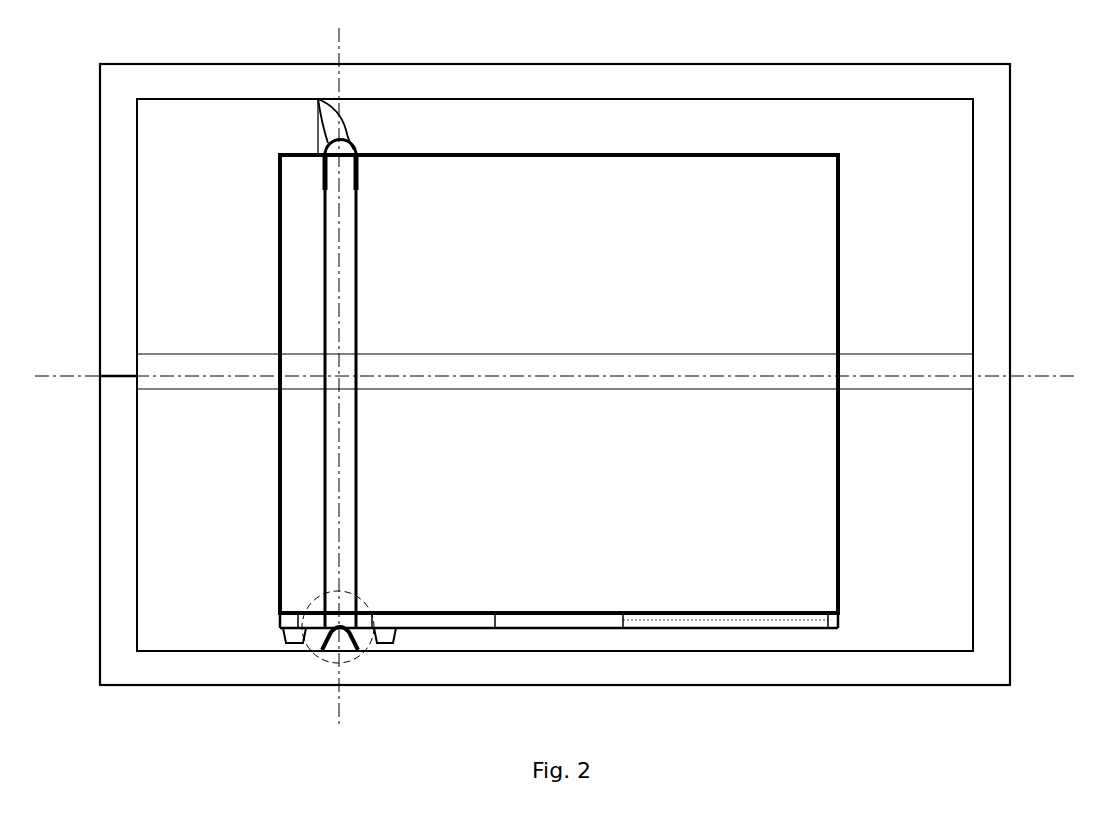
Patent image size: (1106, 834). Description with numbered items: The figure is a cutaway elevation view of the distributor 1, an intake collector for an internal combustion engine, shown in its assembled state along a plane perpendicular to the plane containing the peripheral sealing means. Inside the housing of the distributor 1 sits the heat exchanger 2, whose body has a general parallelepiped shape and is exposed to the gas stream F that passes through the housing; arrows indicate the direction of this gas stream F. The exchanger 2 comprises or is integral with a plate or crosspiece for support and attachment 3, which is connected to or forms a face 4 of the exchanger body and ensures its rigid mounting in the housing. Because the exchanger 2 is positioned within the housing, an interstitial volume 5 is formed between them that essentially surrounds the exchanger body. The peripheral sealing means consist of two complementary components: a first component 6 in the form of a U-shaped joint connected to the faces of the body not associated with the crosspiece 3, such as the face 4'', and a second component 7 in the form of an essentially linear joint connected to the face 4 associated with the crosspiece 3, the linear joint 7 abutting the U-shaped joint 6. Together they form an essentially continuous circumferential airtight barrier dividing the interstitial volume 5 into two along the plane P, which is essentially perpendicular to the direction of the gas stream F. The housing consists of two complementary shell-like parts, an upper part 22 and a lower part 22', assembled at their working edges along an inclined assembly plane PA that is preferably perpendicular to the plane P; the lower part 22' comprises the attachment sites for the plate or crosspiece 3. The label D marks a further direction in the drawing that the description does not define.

The distributor 1 is at (242, 717).
The heat exchanger 2 is at (823, 336).
The plate or crosspiece for support and attachment 3 is at (647, 622).
The face 4 is at (559, 674).
The face 4'' is at (590, 89).
The interstitial volume 5 is at (775, 123).
The first component (U-shaped joint) 6 is at (336, 130).
The second component (linear joint) 7 is at (330, 655).
The upper part of the housing 22 is at (600, 375).
The lower part of the housing 22' is at (1021, 375).
The subdivision plane P is at (340, 47).
The assembly plane PA is at (53, 368).
The direction D is at (346, 657).
The gas stream F is at (228, 477).